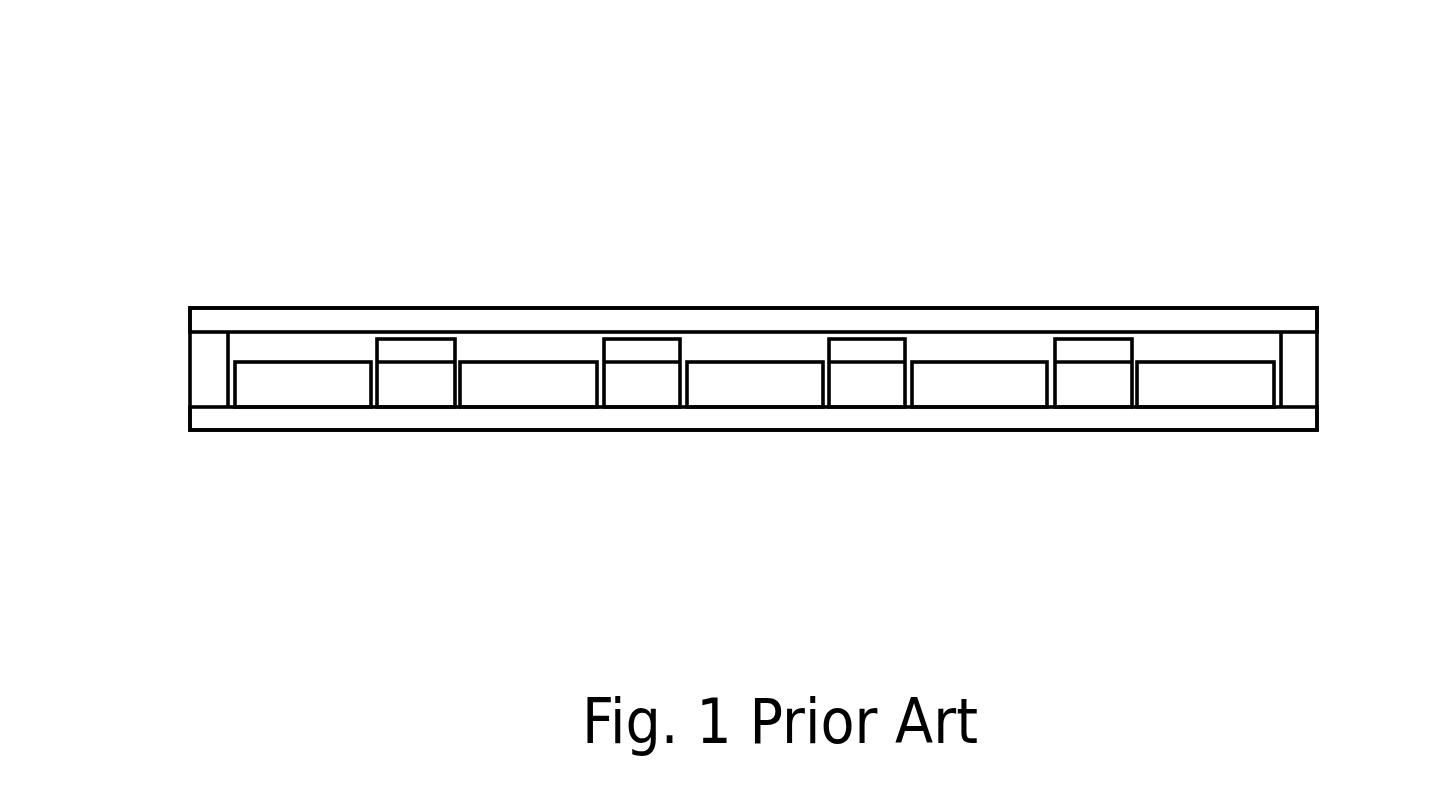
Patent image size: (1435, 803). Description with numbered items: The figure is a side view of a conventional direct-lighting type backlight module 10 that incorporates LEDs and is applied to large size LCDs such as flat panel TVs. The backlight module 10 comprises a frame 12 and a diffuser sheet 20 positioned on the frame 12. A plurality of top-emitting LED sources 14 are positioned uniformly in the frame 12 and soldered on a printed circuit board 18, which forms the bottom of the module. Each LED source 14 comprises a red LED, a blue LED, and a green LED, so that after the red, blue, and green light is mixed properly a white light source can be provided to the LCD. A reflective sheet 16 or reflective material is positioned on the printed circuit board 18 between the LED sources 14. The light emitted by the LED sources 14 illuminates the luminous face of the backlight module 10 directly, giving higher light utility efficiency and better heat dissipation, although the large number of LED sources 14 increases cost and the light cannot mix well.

The backlight module 10 is at (1264, 129).
The frame 12 is at (1297, 383).
The top-emitting LED source 14 is at (1088, 350).
The reflective sheet 16 is at (970, 393).
The printed circuit board 18 is at (880, 419).
The diffuser sheet 20 is at (200, 318).